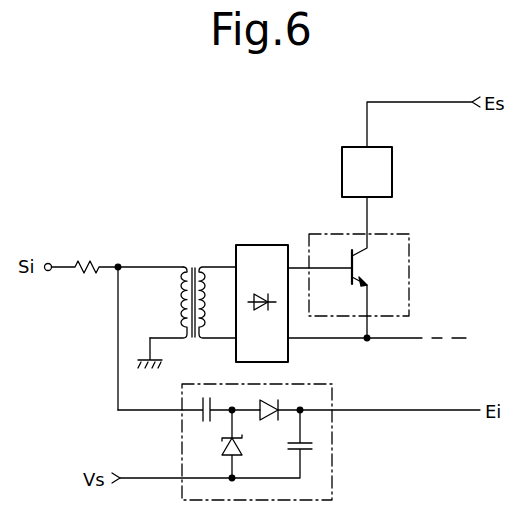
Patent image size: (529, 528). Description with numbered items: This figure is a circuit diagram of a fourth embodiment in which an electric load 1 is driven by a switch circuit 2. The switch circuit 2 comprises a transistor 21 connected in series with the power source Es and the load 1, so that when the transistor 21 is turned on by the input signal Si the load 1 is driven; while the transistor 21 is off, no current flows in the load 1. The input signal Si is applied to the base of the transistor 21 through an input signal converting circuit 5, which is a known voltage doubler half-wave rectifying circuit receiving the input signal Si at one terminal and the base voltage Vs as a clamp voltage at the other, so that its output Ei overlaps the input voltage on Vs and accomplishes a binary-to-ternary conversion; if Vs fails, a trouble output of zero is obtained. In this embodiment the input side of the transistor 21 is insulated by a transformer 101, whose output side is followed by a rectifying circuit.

The electric load 1 is at (392, 168).
The switch circuit 2 is at (370, 267).
The transistor 21 is at (372, 267).
The transformer 101 is at (192, 264).
The input signal converting circuit 5 is at (332, 443).